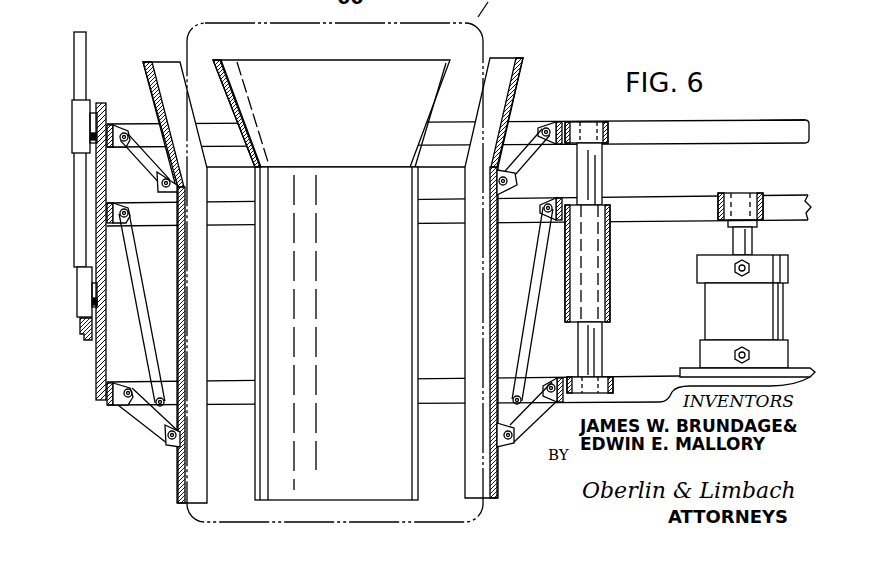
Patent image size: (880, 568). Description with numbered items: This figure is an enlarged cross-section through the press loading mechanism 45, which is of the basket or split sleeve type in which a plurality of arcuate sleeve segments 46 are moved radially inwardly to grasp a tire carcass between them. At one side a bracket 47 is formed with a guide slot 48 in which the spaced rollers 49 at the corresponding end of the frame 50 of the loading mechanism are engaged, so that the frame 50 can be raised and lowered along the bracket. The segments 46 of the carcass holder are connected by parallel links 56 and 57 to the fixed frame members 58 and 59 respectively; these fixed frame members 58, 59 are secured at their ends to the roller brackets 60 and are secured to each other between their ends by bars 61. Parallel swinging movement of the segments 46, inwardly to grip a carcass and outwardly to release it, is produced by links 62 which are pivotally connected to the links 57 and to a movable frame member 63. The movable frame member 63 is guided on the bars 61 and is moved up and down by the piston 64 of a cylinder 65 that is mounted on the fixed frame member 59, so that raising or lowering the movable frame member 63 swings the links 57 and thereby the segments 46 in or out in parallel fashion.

The press loading mechanism 45 is at (512, 53).
The arcuate sleeve segments 46 is at (223, 82).
The bracket 47 is at (82, 335).
The guide slot 48 is at (76, 82).
The spaced rollers 49 is at (77, 137).
The frame 50 is at (784, 118).
The parallel links 56 is at (145, 162).
The parallel links 57 is at (153, 422).
The fixed frame member 58 is at (703, 123).
The fixed frame member 59 is at (637, 383).
The roller brackets 60 is at (98, 375).
The bars 61 is at (596, 177).
The links 62 is at (147, 342).
The movable frame member 63 is at (660, 197).
The piston 64 is at (733, 242).
The cylinder 65 is at (707, 302).